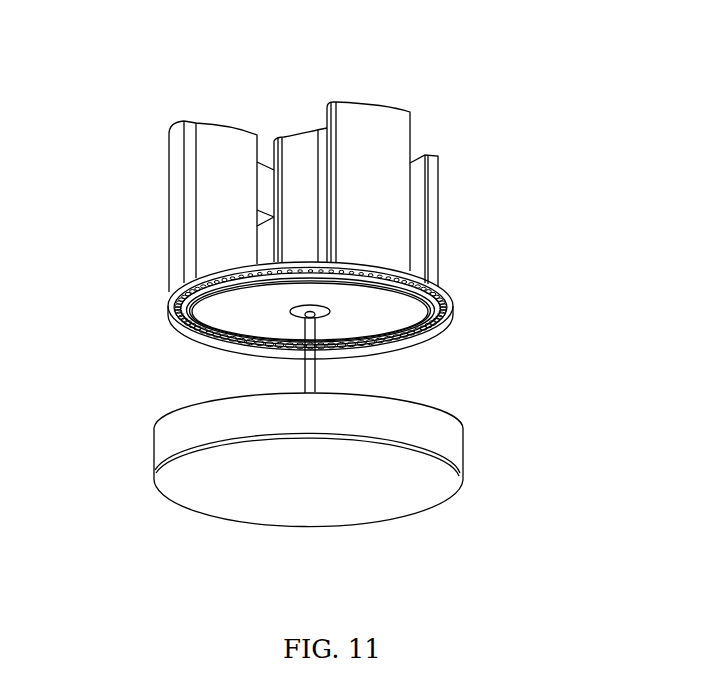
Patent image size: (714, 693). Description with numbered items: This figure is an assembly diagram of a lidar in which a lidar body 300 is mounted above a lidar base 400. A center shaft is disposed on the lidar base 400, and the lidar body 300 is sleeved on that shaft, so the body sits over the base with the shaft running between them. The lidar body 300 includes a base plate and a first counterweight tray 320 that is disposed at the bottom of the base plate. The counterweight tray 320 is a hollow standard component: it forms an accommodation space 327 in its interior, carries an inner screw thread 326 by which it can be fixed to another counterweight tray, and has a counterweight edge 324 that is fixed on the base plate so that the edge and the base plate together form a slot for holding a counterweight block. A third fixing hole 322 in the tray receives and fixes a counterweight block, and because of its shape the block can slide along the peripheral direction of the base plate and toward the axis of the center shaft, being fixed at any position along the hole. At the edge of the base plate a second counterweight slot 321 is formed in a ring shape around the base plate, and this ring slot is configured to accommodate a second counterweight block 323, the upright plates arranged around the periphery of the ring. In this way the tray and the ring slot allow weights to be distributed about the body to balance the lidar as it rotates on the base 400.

The lidar body 300 is at (303, 103).
The counterweight tray 320 is at (177, 330).
The second counterweight slot 321 is at (453, 303).
The third fixing hole 322 is at (447, 325).
The second counterweight block 323 is at (410, 270).
The counterweight edge 324 is at (443, 331).
The inner screw thread 326 is at (200, 335).
The accommodation space 327 is at (368, 312).
The lidar base 400 is at (460, 470).